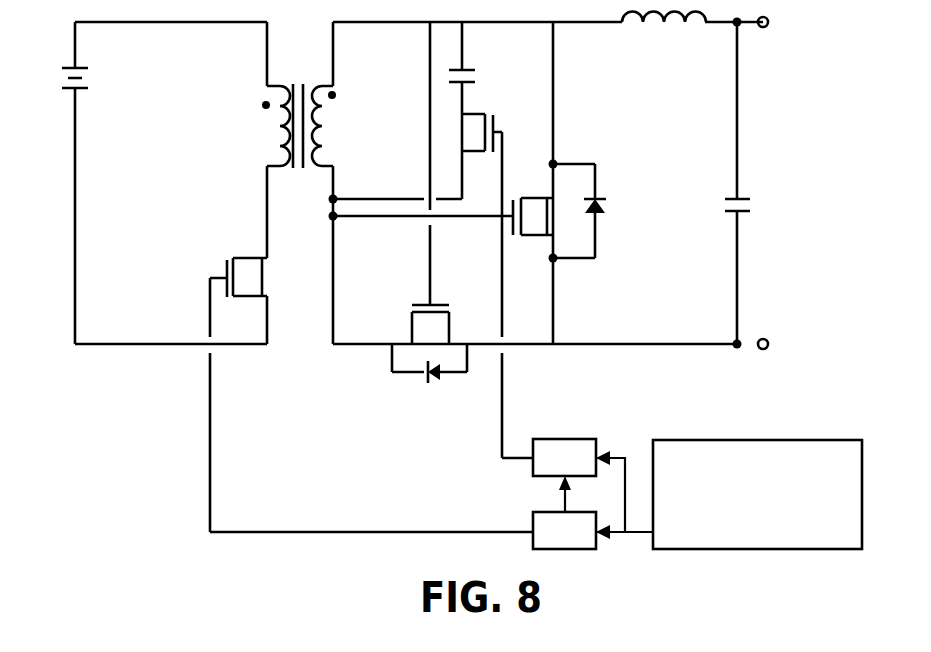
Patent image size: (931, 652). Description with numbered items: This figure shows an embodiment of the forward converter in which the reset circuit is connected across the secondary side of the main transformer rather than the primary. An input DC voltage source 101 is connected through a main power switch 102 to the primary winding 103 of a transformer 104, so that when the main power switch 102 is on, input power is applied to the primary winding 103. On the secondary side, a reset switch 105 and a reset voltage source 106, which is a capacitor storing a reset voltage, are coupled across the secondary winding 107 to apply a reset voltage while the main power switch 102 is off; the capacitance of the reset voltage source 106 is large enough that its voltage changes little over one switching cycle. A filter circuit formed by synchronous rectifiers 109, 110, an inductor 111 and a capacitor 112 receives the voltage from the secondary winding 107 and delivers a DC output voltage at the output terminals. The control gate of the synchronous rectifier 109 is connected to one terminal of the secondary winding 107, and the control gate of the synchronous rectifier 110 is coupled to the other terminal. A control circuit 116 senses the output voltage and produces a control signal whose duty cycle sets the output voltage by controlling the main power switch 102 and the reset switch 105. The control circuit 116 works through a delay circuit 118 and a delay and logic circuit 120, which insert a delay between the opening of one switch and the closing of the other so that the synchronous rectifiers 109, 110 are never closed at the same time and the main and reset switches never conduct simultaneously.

The input DC voltage source 101 is at (80, 69).
The main power switch 102 is at (250, 258).
The primary winding 103 is at (262, 133).
The transformer 104 is at (301, 83).
The reset switch 105 is at (477, 115).
The reset voltage source 106 is at (467, 69).
The secondary winding 107 is at (333, 122).
The synchronous rectifier 109 is at (426, 305).
The synchronous rectifier 110 is at (533, 237).
The inductor 111 is at (673, 24).
The capacitor 112 is at (741, 213).
The control circuit 116 is at (760, 440).
The delay circuit 118 is at (564, 530).
The delay and logic circuit 120 is at (564, 457).